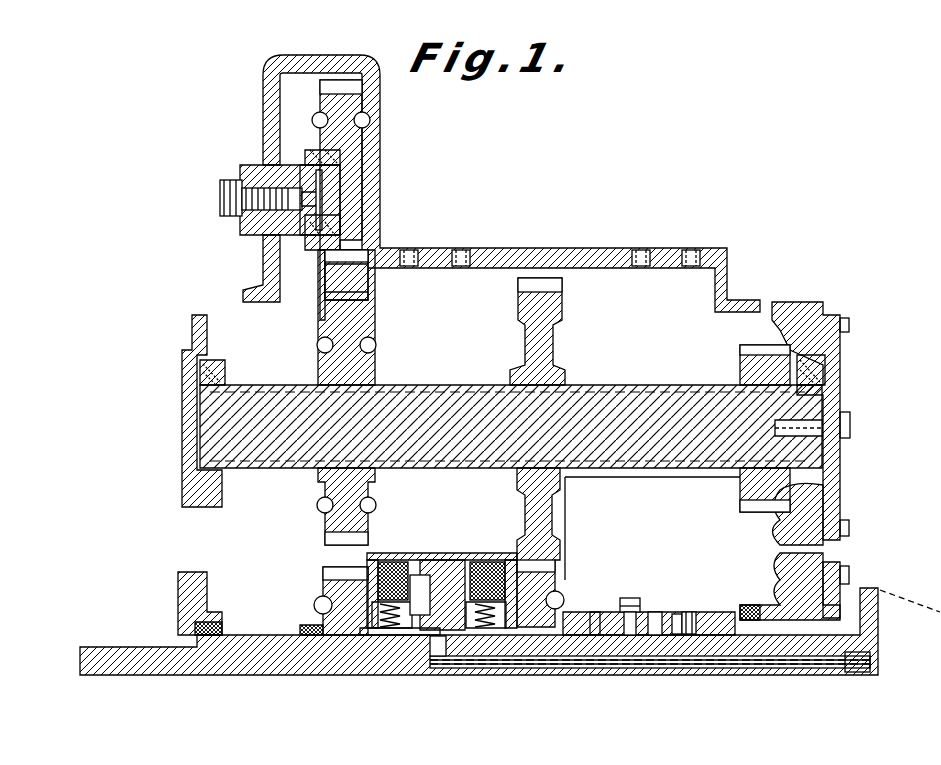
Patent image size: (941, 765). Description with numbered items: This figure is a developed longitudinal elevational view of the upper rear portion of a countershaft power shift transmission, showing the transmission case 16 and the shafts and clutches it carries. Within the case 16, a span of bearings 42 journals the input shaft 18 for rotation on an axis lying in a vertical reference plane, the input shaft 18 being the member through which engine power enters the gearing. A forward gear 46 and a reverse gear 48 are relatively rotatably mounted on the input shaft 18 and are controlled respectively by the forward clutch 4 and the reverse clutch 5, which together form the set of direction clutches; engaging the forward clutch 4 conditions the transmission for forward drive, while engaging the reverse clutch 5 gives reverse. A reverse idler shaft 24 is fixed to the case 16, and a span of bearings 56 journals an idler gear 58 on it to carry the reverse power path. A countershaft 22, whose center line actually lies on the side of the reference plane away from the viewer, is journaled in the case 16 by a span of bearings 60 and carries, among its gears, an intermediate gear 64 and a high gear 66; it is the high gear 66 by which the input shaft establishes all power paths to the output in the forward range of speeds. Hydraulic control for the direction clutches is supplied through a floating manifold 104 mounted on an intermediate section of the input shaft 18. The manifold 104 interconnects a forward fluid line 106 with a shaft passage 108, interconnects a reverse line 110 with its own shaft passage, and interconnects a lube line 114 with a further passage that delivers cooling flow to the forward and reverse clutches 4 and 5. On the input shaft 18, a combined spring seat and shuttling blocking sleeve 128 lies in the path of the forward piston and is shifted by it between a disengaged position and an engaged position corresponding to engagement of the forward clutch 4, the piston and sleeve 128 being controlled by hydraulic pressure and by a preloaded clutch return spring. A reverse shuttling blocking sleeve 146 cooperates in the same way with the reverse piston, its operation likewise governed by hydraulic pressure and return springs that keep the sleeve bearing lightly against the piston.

The forward clutch 4 is at (480, 566).
The reverse clutch 5 is at (395, 566).
The transmission case 16 is at (263, 266).
The input shaft 18 is at (690, 632).
The countershaft 22 is at (807, 406).
The reverse idler shaft 24 is at (363, 214).
The span of bearings 42 is at (212, 630).
The forward gear 46 is at (555, 587).
The reverse gear 48 is at (330, 580).
The span of bearings 56 is at (317, 247).
The idler gear 58 is at (352, 296).
The span of bearings 60 is at (222, 380).
The intermediate gear 64 is at (362, 520).
The high gear 66 is at (543, 520).
The floating manifold 104 is at (675, 614).
The forward fluid line 106 is at (628, 606).
The shaft passage 108 is at (510, 665).
The reverse line 110 is at (655, 612).
The lube line 114 is at (688, 612).
The combined spring seat and shuttling blocking sleeve 128 is at (450, 645).
The reverse shuttling blocking sleeve 146 is at (372, 636).